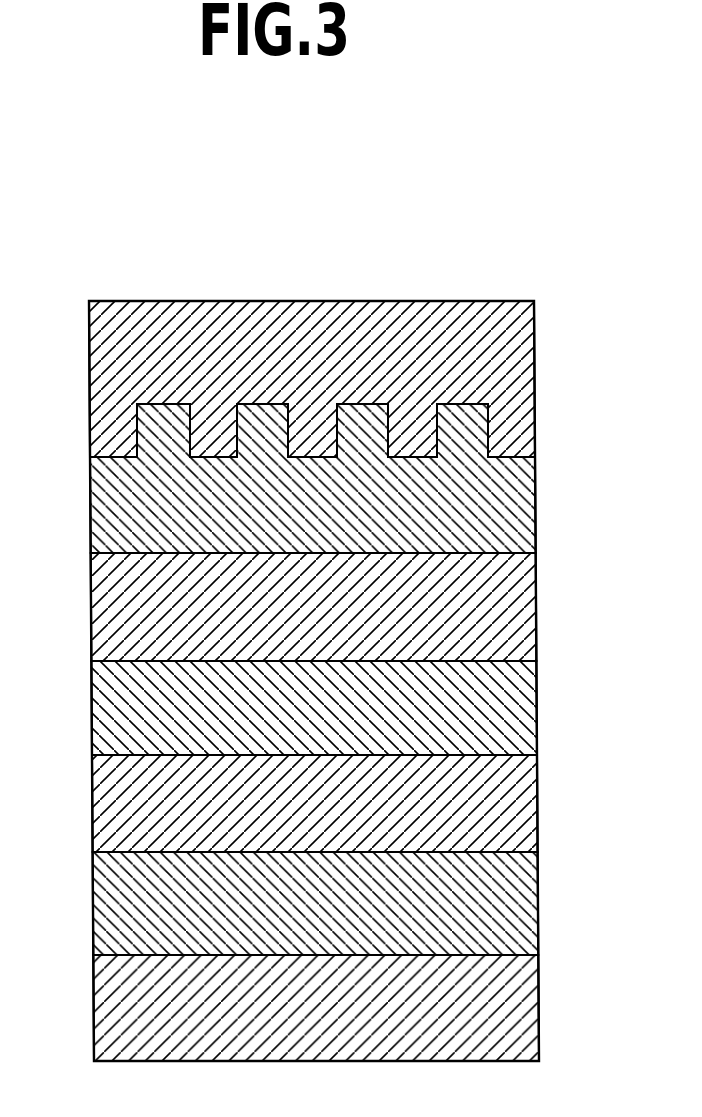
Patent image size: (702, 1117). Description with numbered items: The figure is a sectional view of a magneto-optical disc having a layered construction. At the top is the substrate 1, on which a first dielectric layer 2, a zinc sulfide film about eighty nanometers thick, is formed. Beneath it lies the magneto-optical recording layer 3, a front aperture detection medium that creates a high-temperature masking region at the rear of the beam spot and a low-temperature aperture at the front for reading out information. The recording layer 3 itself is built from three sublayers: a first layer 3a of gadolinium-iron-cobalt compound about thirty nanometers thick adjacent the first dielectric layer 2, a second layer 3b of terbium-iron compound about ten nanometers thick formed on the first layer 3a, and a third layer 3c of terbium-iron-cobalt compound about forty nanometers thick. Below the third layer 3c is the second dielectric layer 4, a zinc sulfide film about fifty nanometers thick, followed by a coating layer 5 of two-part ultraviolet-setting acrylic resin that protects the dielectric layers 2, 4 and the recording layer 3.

The substrate 1 is at (517, 348).
The first dielectric layer 2 is at (527, 493).
The magneto-optical recording layer 3 is at (310, 702).
The first layer 3a is at (525, 610).
The second layer 3b is at (533, 713).
The third layer 3c is at (527, 808).
The second dielectric layer 4 is at (525, 910).
The coating layer 5 is at (525, 1007).